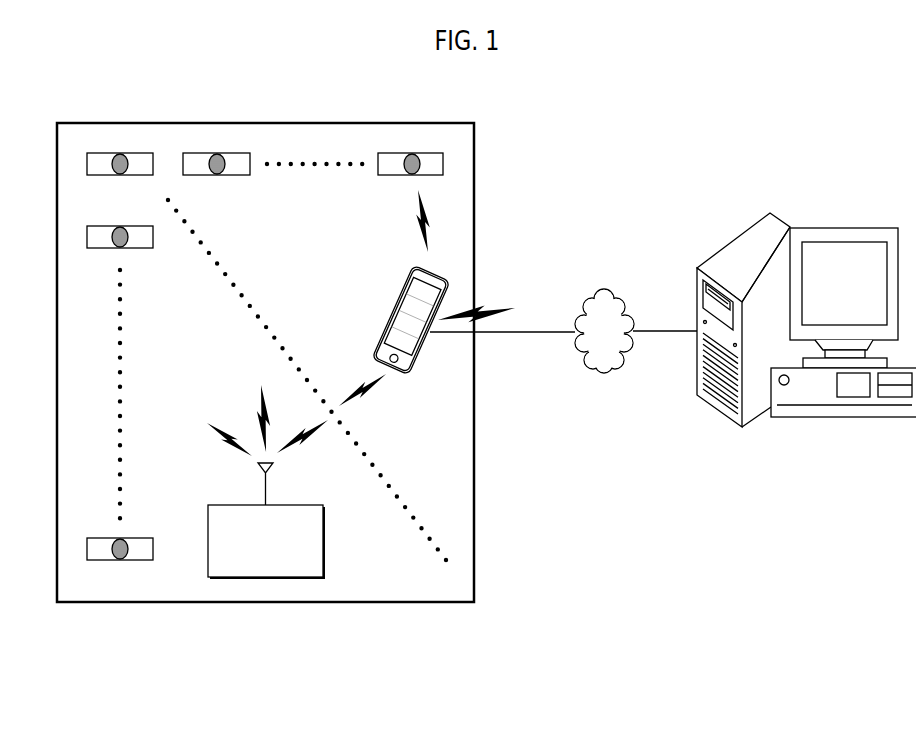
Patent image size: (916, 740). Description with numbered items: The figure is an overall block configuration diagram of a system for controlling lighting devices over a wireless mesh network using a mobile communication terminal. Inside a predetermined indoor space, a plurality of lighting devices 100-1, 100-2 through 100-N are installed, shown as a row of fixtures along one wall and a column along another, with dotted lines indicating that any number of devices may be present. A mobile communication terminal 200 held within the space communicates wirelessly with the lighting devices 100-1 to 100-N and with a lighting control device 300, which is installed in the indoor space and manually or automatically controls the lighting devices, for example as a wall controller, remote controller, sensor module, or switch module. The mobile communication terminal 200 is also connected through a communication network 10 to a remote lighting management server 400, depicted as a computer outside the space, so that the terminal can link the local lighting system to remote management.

The lighting device 100-1 is at (120, 153).
The lighting device 100-2 is at (216, 153).
The lighting device 100-N is at (412, 153).
The mobile communication terminal 200 is at (385, 305).
The lighting control device 300 is at (263, 578).
The communication network 10 is at (603, 290).
The remote lighting management server 400 is at (842, 228).